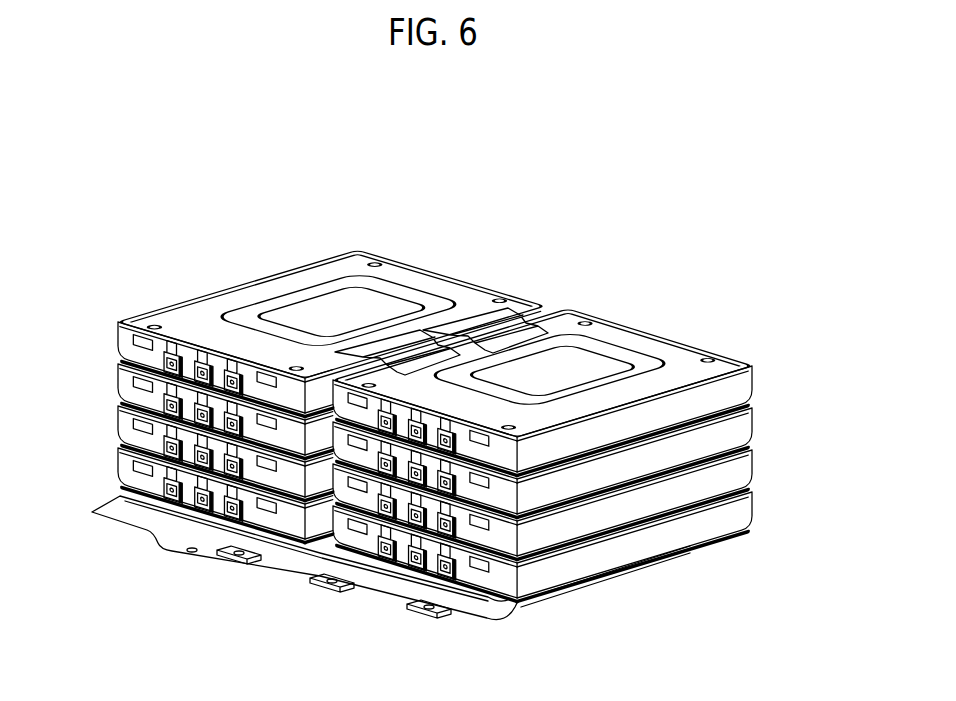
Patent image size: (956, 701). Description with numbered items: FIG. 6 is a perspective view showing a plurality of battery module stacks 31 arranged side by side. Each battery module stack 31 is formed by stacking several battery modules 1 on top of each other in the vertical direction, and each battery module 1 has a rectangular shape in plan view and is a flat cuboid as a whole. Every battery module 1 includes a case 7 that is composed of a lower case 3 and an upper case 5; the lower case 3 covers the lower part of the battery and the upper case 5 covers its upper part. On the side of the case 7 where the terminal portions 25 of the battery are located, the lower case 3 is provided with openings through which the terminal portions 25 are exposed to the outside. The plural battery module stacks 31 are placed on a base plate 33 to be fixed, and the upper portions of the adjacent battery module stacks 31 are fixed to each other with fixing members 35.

The battery module 1 is at (436, 413).
The lower case 3 is at (438, 453).
The upper case 5 is at (197, 311).
The case 7 is at (389, 425).
The terminal portions 25 is at (228, 520).
The battery module stack 31 is at (434, 367).
The base plate 33 is at (413, 622).
The fixing members 35 is at (476, 330).